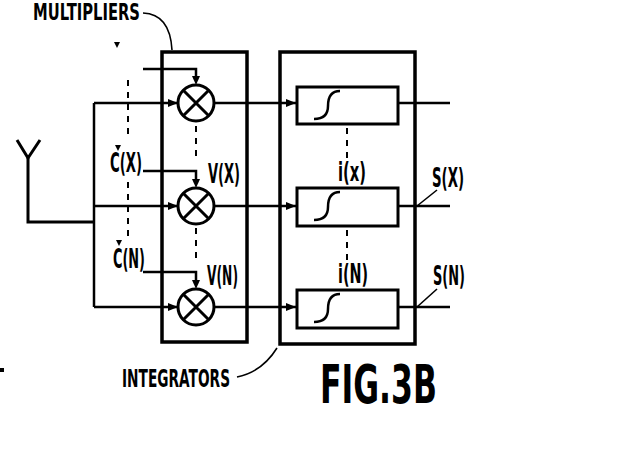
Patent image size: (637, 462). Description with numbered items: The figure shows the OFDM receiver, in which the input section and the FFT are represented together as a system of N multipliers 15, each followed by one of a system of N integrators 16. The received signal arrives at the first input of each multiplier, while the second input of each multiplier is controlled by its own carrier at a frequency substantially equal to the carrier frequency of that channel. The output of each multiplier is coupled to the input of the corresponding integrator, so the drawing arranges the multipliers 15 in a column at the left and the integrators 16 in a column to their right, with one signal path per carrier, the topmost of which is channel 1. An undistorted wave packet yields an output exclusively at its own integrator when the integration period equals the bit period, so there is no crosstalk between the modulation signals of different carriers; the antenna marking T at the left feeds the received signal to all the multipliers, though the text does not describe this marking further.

The multipliers 15 is at (200, 52).
The integrators 16 is at (343, 52).
The antenna T is at (42, 222).
The first channel (multiplier/integrator path 1) 1 is at (437, 84).